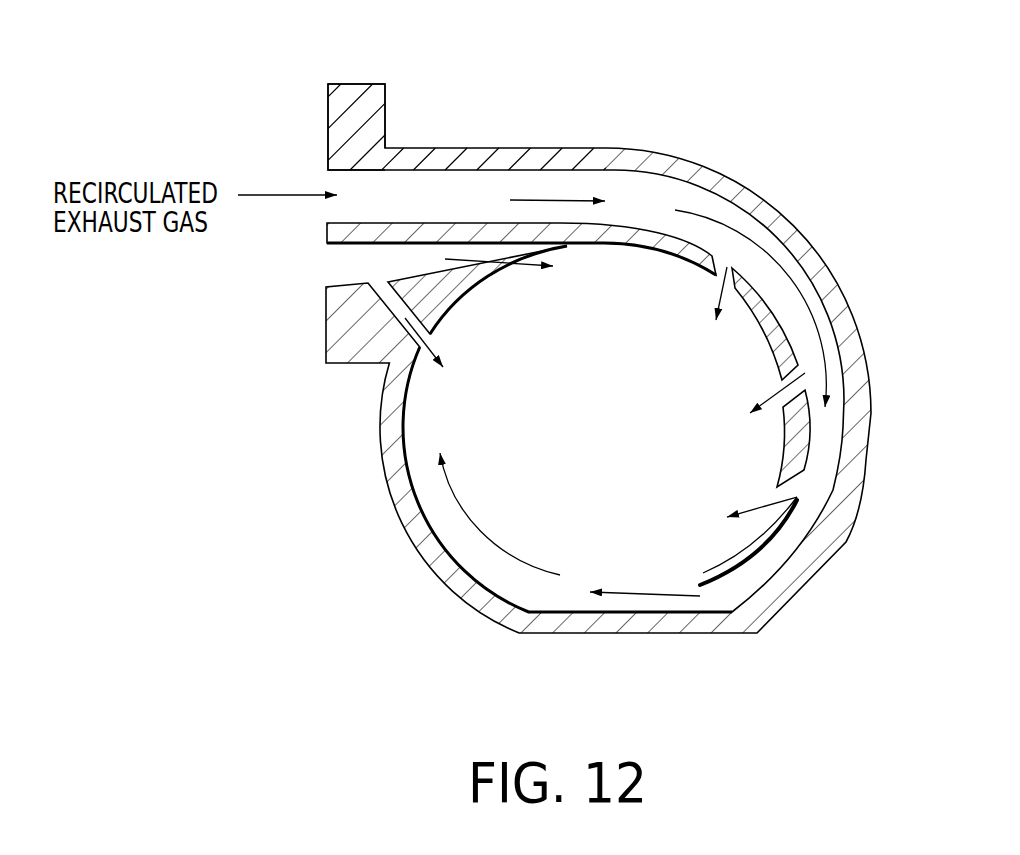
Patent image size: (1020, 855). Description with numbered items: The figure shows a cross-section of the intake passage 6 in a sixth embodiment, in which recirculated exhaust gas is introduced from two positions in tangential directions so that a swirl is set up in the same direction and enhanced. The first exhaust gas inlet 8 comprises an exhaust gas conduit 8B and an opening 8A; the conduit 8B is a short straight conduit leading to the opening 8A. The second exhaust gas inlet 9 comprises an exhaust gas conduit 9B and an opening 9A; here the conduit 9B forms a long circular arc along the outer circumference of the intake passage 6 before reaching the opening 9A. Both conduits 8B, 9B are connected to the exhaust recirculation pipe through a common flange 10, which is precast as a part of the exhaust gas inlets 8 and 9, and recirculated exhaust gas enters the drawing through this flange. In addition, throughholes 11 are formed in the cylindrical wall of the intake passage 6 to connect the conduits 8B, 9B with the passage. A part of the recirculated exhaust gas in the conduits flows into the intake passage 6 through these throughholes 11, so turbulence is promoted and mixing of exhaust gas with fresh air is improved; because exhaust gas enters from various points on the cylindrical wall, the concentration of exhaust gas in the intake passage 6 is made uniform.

The intake passage 6 is at (590, 560).
The exhaust gas inlet 8 is at (412, 268).
The opening 8A is at (510, 249).
The exhaust gas conduit 8B is at (433, 263).
The exhaust gas inlet 9 is at (856, 520).
The opening 9A is at (703, 593).
The exhaust gas conduit 9B is at (772, 280).
The common flange 10 is at (345, 98).
The throughholes 11 is at (403, 332).